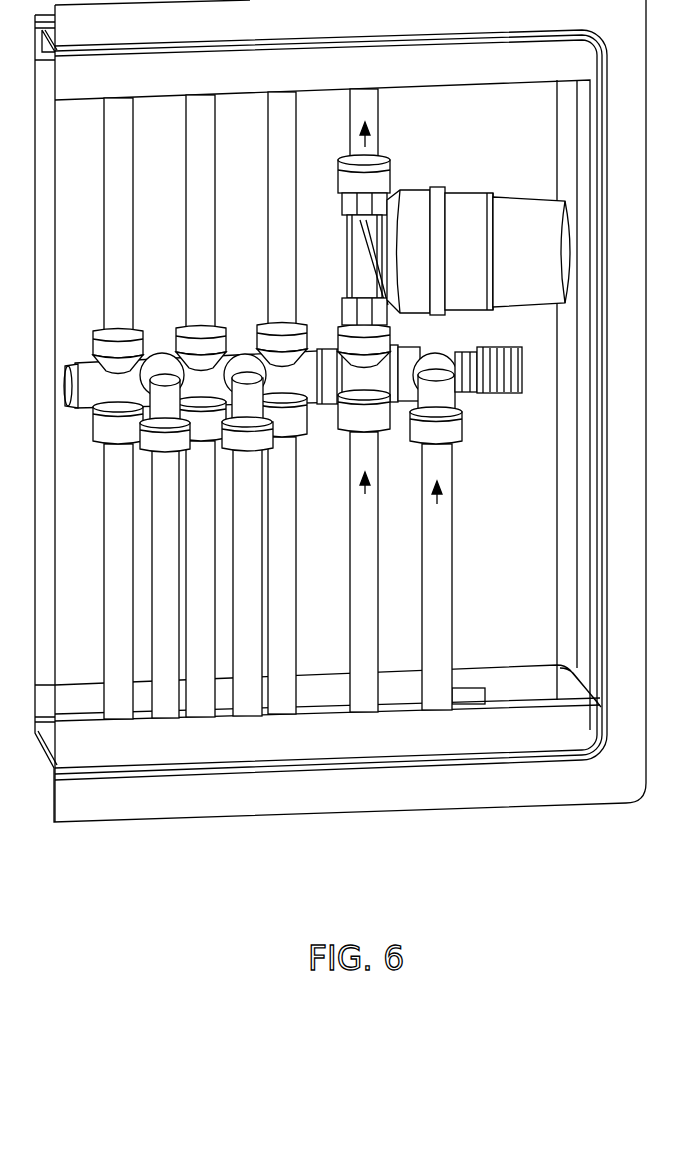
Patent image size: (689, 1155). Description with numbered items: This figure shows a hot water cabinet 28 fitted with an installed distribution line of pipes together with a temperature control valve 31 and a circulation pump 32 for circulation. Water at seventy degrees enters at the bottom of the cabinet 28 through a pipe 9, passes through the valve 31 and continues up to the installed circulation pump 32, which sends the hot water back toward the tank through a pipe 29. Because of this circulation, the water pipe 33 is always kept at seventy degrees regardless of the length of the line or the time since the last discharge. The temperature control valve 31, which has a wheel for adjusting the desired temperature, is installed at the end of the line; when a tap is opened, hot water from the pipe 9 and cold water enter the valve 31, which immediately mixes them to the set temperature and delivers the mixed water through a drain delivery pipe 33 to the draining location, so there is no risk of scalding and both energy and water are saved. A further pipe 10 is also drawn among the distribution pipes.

The cabinet 28 is at (443, 783).
The pipe 29 is at (372, 112).
The temperature control valve 31 is at (413, 353).
The circulation pump 32 is at (433, 195).
The water pipe 33 is at (278, 258).
The pipe 9 is at (362, 503).
The supply pipe 10 is at (443, 516).